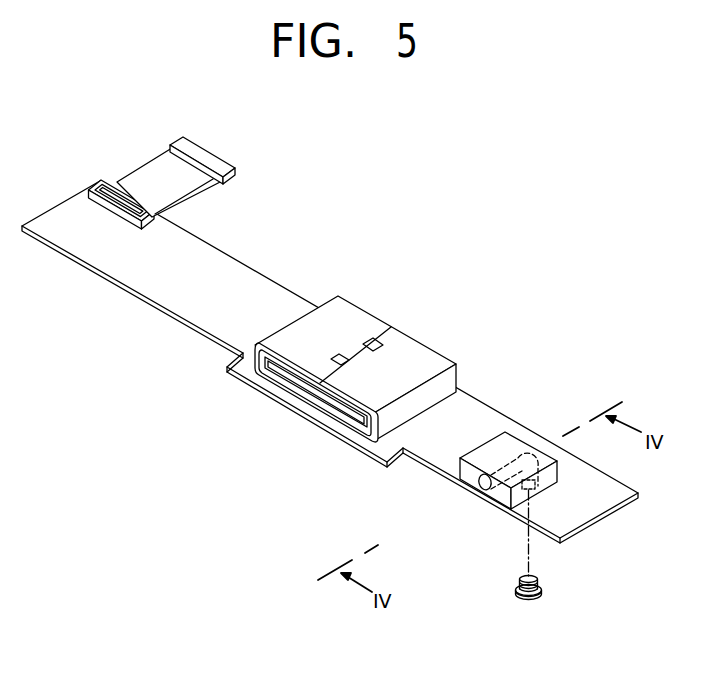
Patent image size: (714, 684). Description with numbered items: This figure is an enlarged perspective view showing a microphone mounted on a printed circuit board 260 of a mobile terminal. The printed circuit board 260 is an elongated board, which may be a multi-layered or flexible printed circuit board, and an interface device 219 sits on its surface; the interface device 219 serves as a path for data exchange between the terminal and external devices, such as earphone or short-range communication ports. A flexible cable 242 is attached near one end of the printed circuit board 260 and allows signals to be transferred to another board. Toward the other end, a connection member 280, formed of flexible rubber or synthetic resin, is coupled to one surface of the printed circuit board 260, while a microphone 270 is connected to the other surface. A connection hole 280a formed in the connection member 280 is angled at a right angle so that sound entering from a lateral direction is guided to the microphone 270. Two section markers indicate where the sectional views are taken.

The printed circuit board 260 is at (252, 277).
The flexible cable 242 is at (152, 172).
The interface device 219 is at (373, 319).
The connection member 280 is at (512, 447).
The connection hole 280a is at (482, 487).
The microphone 270 is at (517, 596).